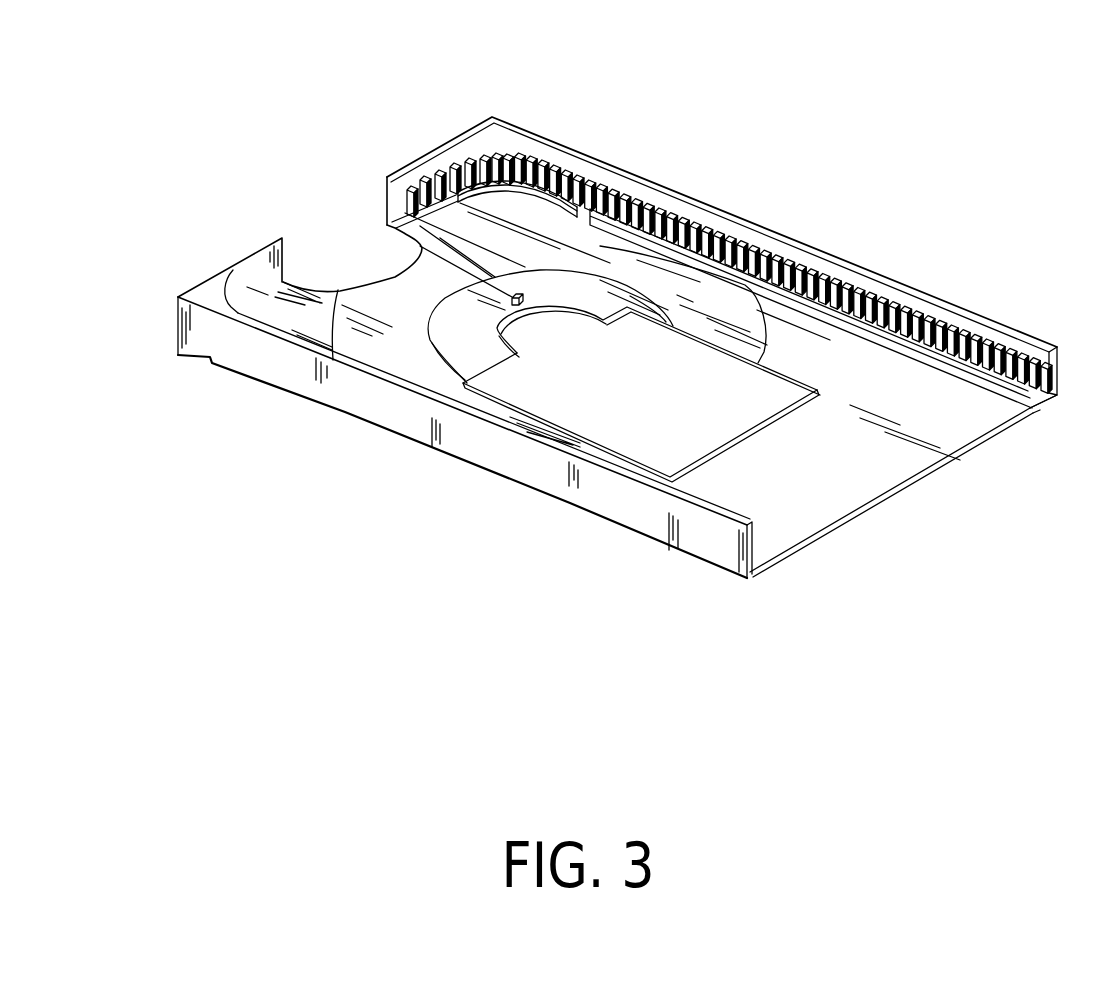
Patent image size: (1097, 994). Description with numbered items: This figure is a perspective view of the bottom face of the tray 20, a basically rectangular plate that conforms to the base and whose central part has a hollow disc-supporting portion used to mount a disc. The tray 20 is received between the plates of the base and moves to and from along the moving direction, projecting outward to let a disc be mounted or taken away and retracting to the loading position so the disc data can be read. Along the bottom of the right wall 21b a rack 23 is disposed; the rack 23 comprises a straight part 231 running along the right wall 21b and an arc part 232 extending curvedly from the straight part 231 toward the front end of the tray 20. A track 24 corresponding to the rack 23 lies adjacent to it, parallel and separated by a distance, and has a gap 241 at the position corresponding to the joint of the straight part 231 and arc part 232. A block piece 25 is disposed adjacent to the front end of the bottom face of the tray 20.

The tray 20 is at (848, 490).
The right wall 21b is at (917, 293).
The rack 23 is at (729, 205).
The straight part 231 is at (833, 273).
The arc part 232 is at (483, 157).
The track 24 is at (1003, 388).
The gap 241 is at (602, 197).
The block piece 25 is at (420, 240).